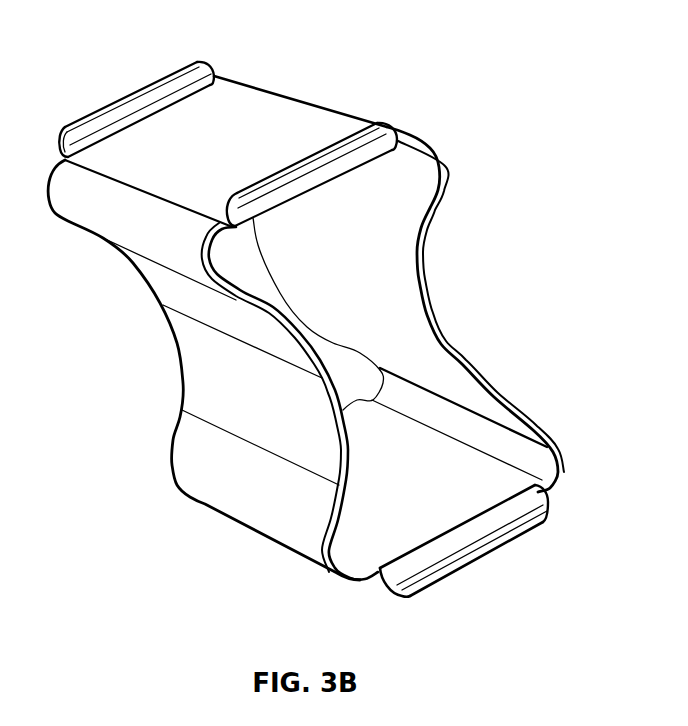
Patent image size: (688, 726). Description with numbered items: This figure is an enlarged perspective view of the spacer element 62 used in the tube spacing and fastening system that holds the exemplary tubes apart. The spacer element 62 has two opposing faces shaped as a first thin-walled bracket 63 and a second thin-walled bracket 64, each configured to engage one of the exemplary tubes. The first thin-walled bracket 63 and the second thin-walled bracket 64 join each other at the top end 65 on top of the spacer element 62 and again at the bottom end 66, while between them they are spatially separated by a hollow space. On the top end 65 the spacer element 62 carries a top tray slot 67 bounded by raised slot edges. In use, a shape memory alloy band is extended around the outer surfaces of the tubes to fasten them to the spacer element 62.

The spacer element 62 is at (478, 104).
The first thin-walled bracket 63 is at (197, 378).
The second thin-walled bracket 64 is at (487, 390).
The top end 65 is at (229, 155).
The bottom end 66 is at (332, 594).
The top tray slot 67 is at (267, 103).